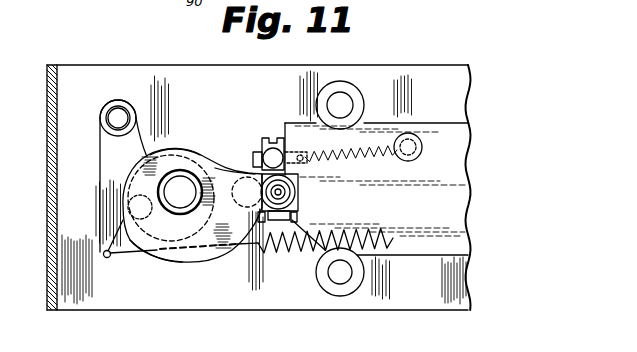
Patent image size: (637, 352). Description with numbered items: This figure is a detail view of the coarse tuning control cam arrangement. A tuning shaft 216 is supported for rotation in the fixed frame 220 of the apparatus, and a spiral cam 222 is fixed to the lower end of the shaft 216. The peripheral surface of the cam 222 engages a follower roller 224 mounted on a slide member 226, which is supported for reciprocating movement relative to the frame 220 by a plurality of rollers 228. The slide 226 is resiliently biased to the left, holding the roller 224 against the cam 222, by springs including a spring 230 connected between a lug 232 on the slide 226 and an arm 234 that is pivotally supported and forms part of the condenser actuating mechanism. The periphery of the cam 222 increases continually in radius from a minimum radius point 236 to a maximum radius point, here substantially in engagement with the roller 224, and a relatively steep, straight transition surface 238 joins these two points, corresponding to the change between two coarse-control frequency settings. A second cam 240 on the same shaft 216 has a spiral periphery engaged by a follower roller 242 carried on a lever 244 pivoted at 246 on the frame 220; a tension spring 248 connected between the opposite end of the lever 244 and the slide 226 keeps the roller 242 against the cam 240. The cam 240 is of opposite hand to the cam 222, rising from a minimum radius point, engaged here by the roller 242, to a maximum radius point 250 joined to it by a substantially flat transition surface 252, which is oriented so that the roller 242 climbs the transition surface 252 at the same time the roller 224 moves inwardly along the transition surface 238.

The tuning shaft 216 is at (187, 200).
The fixed frame 220 is at (205, 57).
The spiral cam 222 is at (208, 257).
The follower roller 224 is at (300, 193).
The slide member 226 is at (457, 142).
The rollers 228 is at (342, 88).
The spring 230 is at (356, 157).
The lug 232 is at (397, 146).
The arm 234 is at (267, 140).
The minimum radius point 236 is at (205, 155).
The transition surface 238 is at (240, 147).
The cam 240 is at (192, 266).
The follower roller 242 is at (122, 210).
The lever 244 is at (107, 147).
The pivot 246 is at (137, 93).
The tension spring 248 is at (278, 256).
The maximum radius point 250 is at (153, 257).
The transition surface 252 is at (154, 222).